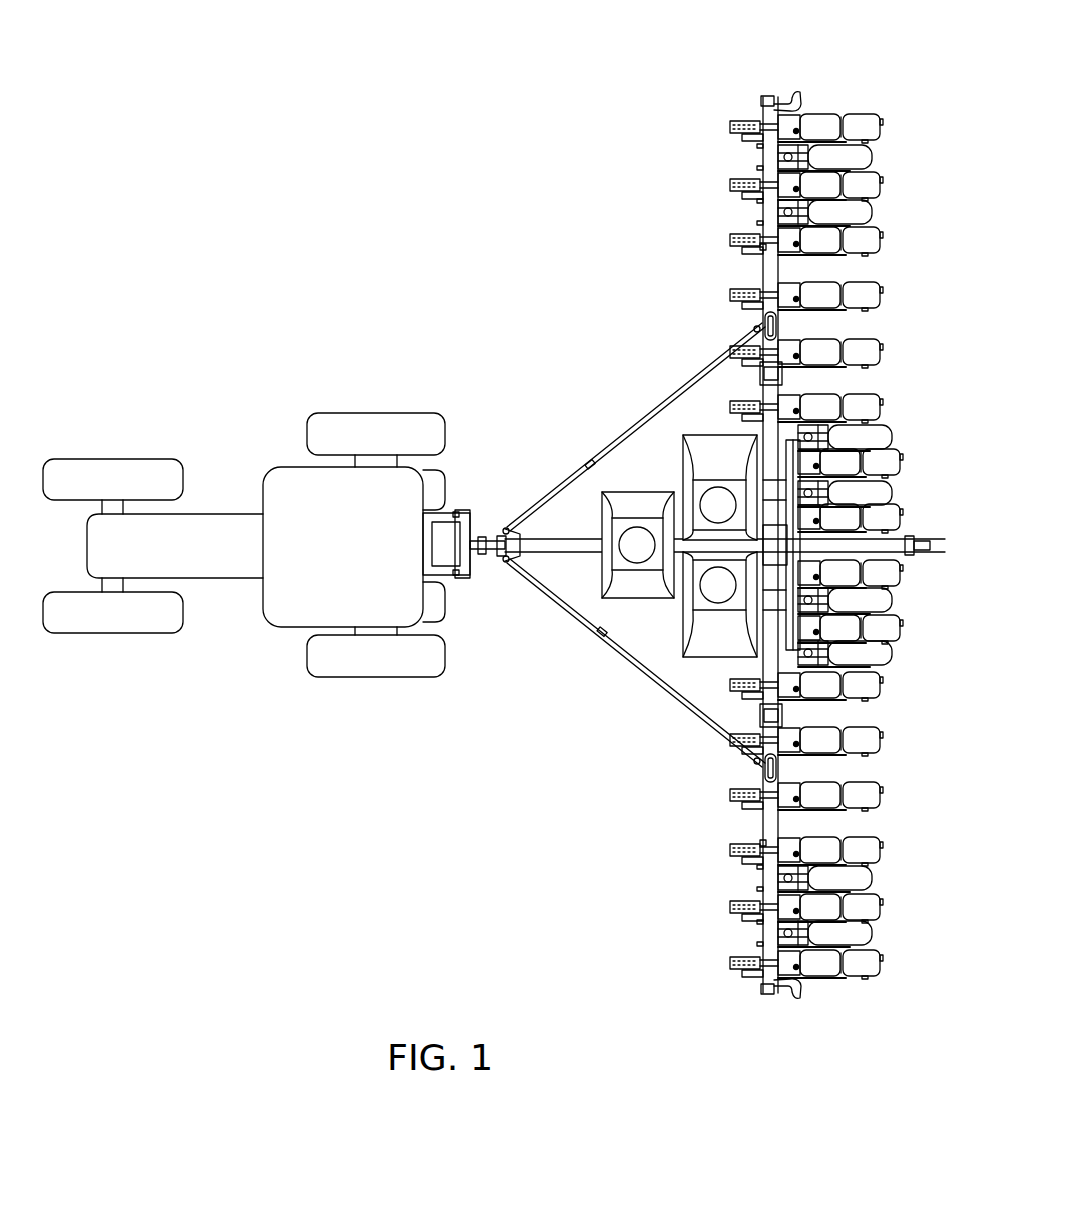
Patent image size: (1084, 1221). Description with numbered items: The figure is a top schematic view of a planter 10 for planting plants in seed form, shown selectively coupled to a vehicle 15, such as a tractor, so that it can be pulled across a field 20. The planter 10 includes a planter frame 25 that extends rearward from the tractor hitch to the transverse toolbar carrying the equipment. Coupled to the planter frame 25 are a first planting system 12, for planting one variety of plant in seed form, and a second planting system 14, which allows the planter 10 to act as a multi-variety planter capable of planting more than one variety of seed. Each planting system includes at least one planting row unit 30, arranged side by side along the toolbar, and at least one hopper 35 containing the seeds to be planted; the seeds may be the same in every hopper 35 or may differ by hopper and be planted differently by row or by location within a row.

The planter 10 is at (605, 168).
The first planting system 12 is at (648, 147).
The second planting system 14 is at (655, 778).
The vehicle 15 is at (232, 382).
The field 20 is at (330, 898).
The planter frame 25 is at (710, 370).
The planting row unit 30 is at (890, 125).
The hopper 35 is at (702, 455).